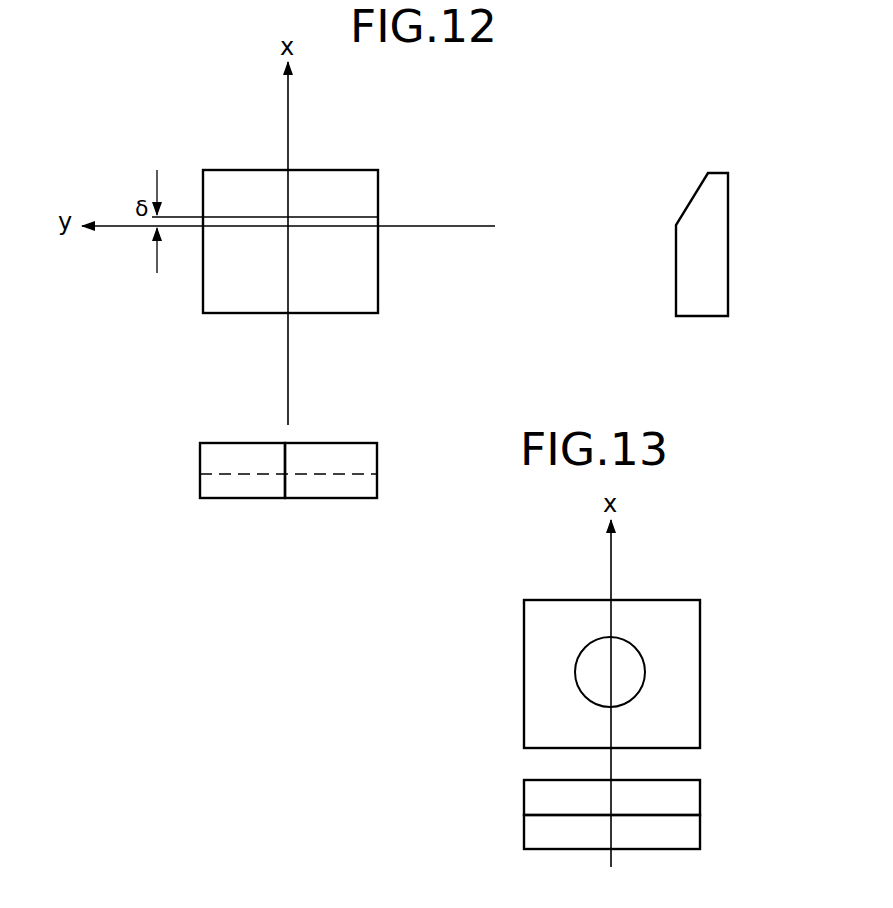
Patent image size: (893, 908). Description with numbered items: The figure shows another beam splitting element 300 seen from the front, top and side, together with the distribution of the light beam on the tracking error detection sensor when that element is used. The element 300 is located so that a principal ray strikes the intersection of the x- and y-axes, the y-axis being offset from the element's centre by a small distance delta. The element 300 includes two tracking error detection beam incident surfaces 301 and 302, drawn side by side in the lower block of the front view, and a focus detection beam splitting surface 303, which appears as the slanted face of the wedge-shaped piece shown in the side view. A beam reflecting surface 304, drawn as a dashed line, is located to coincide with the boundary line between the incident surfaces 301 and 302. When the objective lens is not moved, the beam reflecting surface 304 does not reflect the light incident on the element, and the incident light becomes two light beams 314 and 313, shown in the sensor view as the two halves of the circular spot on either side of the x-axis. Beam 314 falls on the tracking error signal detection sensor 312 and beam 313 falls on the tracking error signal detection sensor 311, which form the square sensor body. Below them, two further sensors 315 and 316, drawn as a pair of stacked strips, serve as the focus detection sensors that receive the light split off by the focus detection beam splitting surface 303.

In FIG. 12, the photodetector 300 is at (240, 170).
In FIG. 12, the tracking error detection beam incident surface 301 is at (358, 300).
In FIG. 12, the tracking error detection beam incident surface 302 is at (233, 300).
In FIG. 12, the focus detection beam splitting surface 303 is at (698, 191).
In FIG. 12, the beam reflecting surface 304 is at (287, 481).
In FIG. 13, the tracking error signal detection sensor 311 is at (670, 633).
In FIG. 13, the tracking error signal detection sensor 312 is at (546, 628).
In FIG. 13, the light beam 313 is at (645, 678).
In FIG. 13, the light beam 314 is at (575, 668).
In FIG. 13, the focus detection sensor 315 is at (692, 797).
In FIG. 13, the focus detection sensor 316 is at (688, 838).